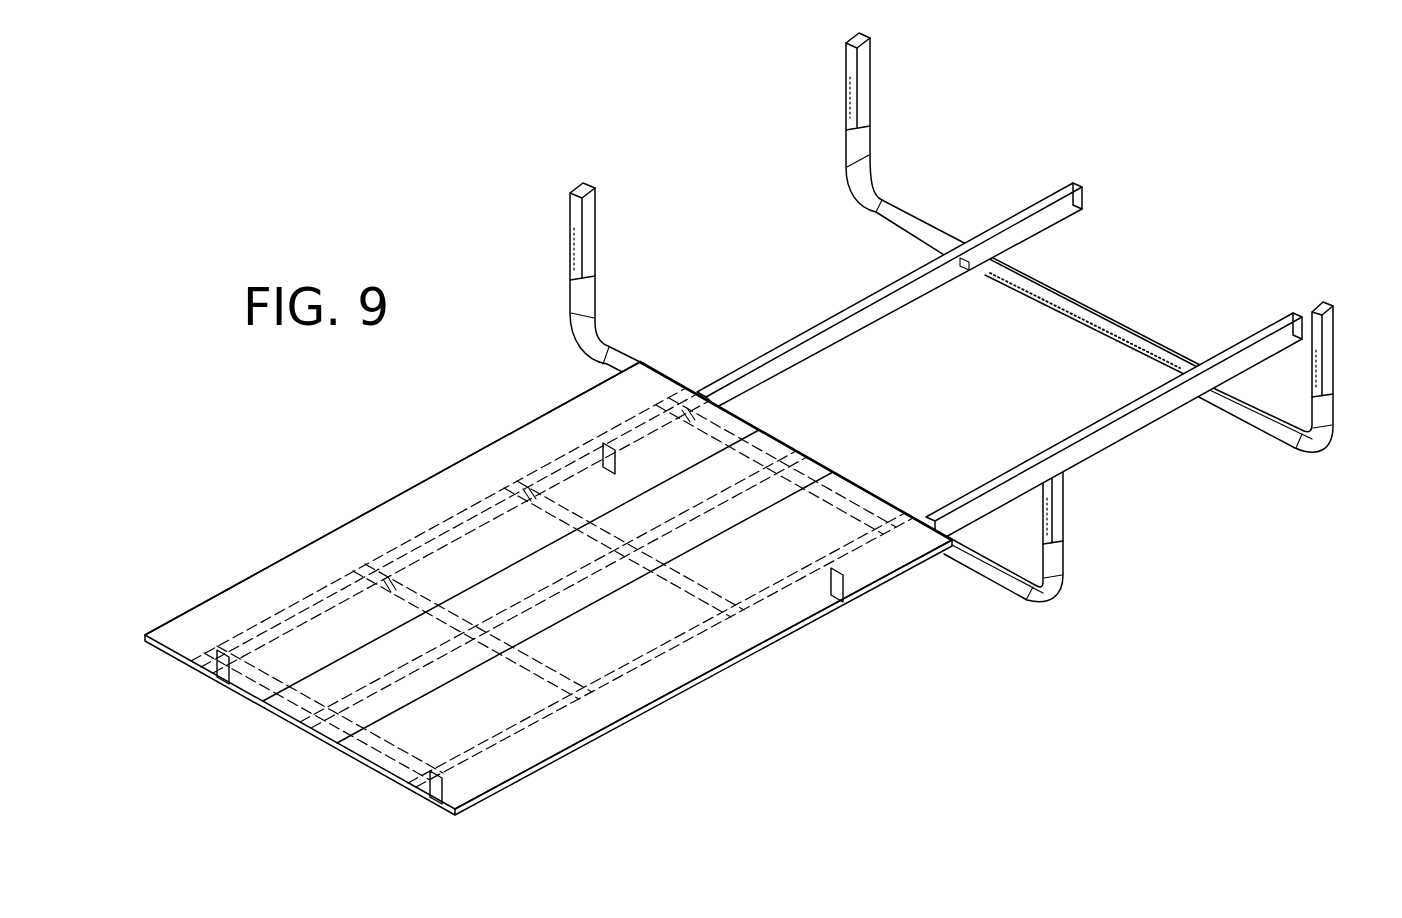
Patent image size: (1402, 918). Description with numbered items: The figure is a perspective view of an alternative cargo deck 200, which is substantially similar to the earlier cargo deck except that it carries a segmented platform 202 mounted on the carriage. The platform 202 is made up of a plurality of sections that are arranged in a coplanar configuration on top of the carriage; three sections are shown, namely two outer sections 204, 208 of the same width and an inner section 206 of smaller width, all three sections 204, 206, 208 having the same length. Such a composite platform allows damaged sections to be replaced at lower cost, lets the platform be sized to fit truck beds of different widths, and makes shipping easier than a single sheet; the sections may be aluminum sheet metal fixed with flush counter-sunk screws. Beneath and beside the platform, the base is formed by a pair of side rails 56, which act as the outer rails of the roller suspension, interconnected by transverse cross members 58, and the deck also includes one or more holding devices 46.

The holding device 46 is at (822, 120).
The side rail of the base 56 is at (1105, 419).
The transverse cross member 58 is at (1068, 303).
The alternative cargo deck 200 is at (282, 548).
The segmented platform 202 is at (526, 418).
The outer section 204 is at (329, 699).
The inner section 206 is at (437, 508).
The outer section 208 is at (740, 655).